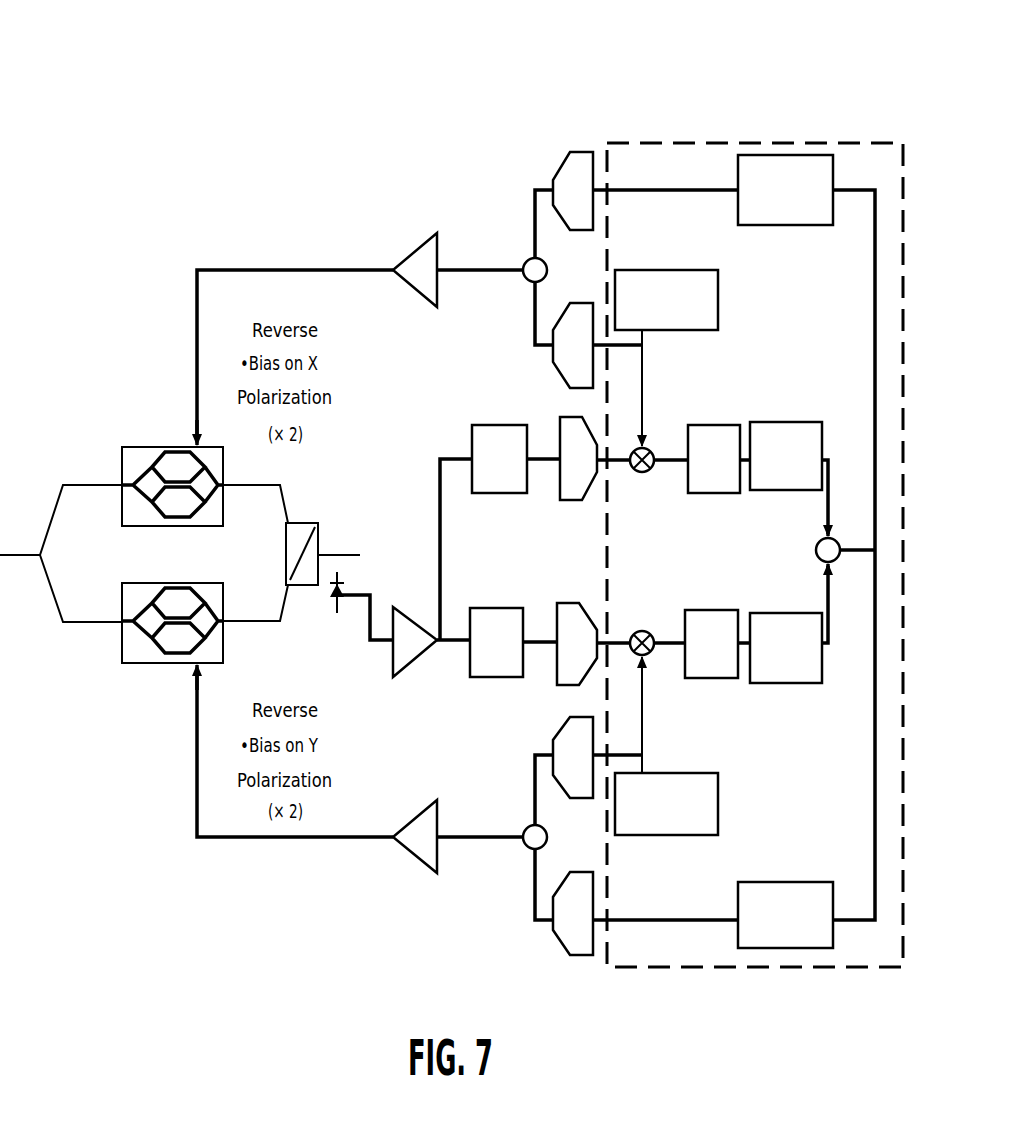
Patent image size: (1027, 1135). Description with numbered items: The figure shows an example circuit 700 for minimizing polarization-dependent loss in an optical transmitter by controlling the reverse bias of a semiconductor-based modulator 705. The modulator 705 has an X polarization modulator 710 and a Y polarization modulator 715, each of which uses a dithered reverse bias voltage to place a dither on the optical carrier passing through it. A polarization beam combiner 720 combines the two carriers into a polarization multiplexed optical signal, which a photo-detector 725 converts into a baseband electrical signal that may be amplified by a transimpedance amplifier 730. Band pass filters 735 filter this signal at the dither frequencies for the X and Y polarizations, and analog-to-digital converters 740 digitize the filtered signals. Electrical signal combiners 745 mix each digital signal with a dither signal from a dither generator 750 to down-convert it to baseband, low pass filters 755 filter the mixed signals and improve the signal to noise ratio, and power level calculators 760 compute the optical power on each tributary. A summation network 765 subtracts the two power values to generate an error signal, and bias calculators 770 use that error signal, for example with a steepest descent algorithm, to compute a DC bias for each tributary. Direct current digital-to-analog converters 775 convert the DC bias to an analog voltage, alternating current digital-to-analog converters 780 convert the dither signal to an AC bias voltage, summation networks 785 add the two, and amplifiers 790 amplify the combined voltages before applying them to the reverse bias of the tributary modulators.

The circuit 700 is at (97, 27).
The modulator 705 is at (105, 560).
The X polarization modulator 710 is at (136, 466).
The Y polarization modulator 715 is at (138, 637).
The polarization beam combiner 720 is at (335, 474).
The photo-detector 725 is at (342, 617).
The transimpedance amplifier 730 is at (402, 601).
The band pass filters 735 is at (470, 420).
The analog-to-digital converters 740 is at (553, 416).
The electrical signal combiners 745 is at (642, 474).
The dither generators 750 is at (722, 300).
The low pass filters 755 is at (714, 423).
The power level calculators 760 is at (786, 420).
The summation network 765 is at (814, 550).
The bias calculators 770 is at (786, 153).
The direct current digital-to-analog converters 775 is at (579, 150).
The alternating current digital-to-analog converters 780 is at (578, 301).
The summation networks 785 is at (523, 255).
The amplifiers 790 is at (417, 238).